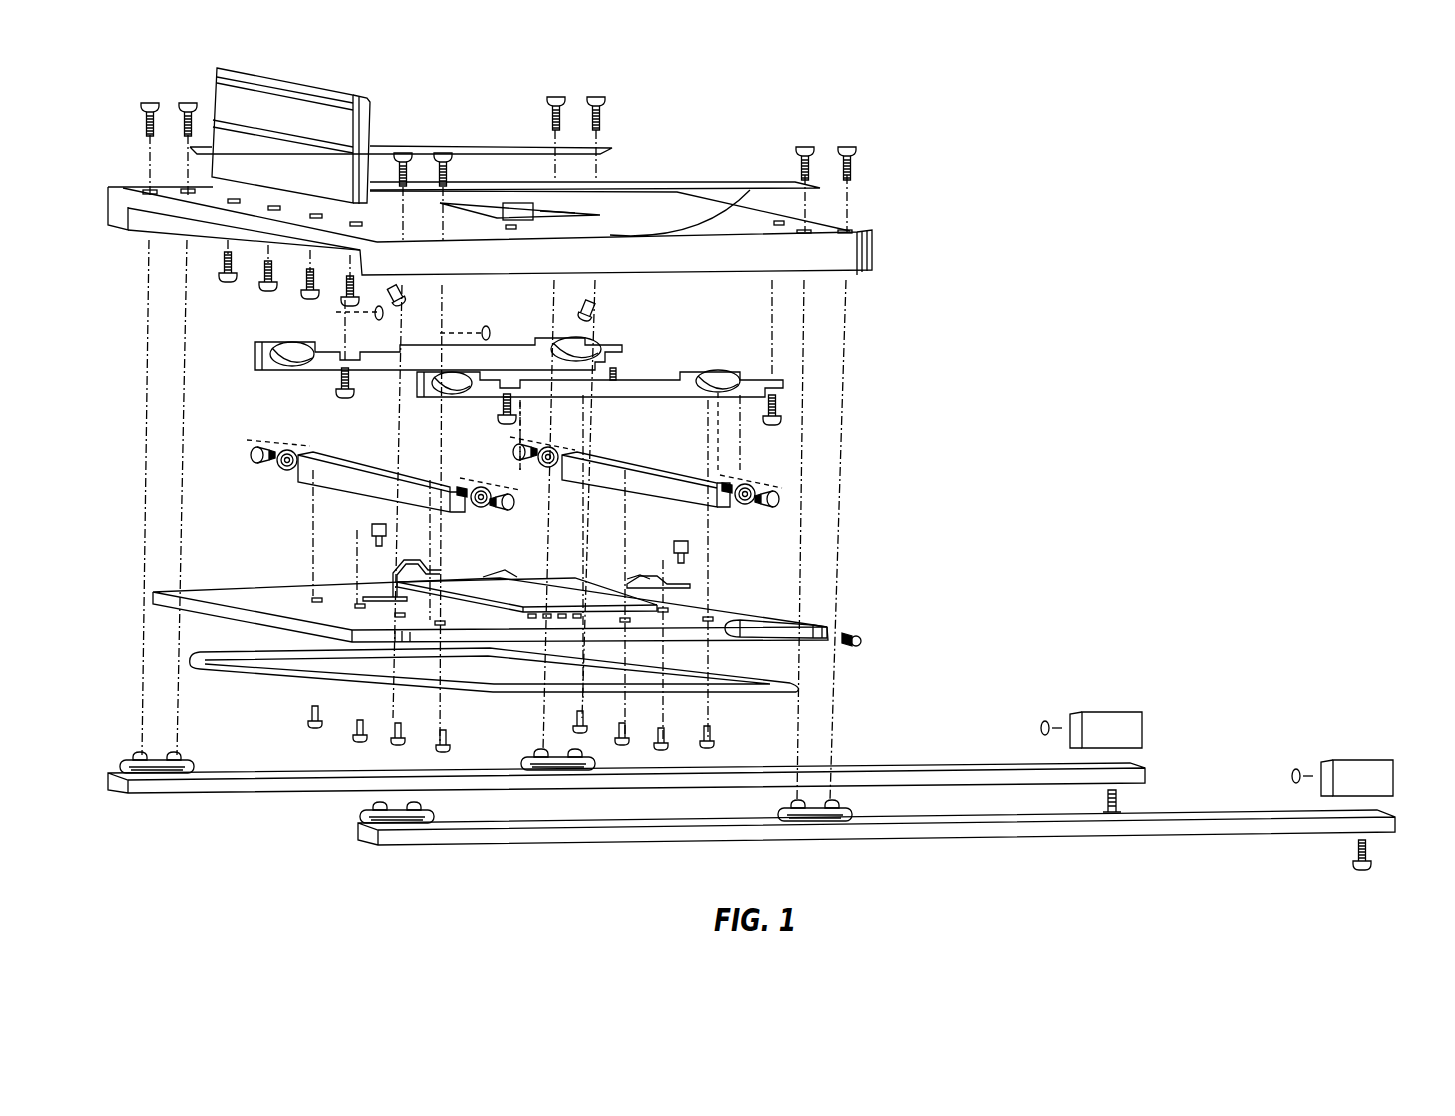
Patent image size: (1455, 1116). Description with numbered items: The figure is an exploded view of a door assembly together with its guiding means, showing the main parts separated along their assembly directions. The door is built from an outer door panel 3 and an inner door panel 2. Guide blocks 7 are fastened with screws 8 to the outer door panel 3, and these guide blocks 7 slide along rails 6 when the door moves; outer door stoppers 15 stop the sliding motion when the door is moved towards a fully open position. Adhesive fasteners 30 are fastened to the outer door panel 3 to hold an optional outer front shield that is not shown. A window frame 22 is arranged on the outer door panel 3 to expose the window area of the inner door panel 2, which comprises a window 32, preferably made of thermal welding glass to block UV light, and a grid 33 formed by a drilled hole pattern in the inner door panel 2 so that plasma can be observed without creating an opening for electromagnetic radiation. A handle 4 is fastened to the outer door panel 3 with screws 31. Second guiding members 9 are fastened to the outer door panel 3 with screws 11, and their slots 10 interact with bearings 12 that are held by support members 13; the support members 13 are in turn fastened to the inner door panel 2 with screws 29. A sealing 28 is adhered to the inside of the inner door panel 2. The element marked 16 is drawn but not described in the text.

The inner door panel 2 is at (727, 610).
The outer door panel 3 is at (838, 255).
The handle 4 is at (232, 107).
The rails 6 is at (282, 793).
The guide blocks 7 is at (167, 778).
The screws 8 is at (150, 102).
The second guiding members 9 is at (620, 345).
The slots 10 is at (288, 352).
The screws 11 is at (338, 390).
The bearings 12 is at (280, 465).
The support members 13 is at (330, 483).
The outer door stoppers 15 is at (1135, 727).
The rod 16 is at (780, 628).
The window frame 22 is at (545, 212).
The sealing 28 is at (795, 692).
The screws 29 is at (312, 718).
The adhesive fasteners 30 is at (800, 182).
The screws 31 is at (222, 280).
The window 32 is at (485, 585).
The grid 33 is at (520, 625).